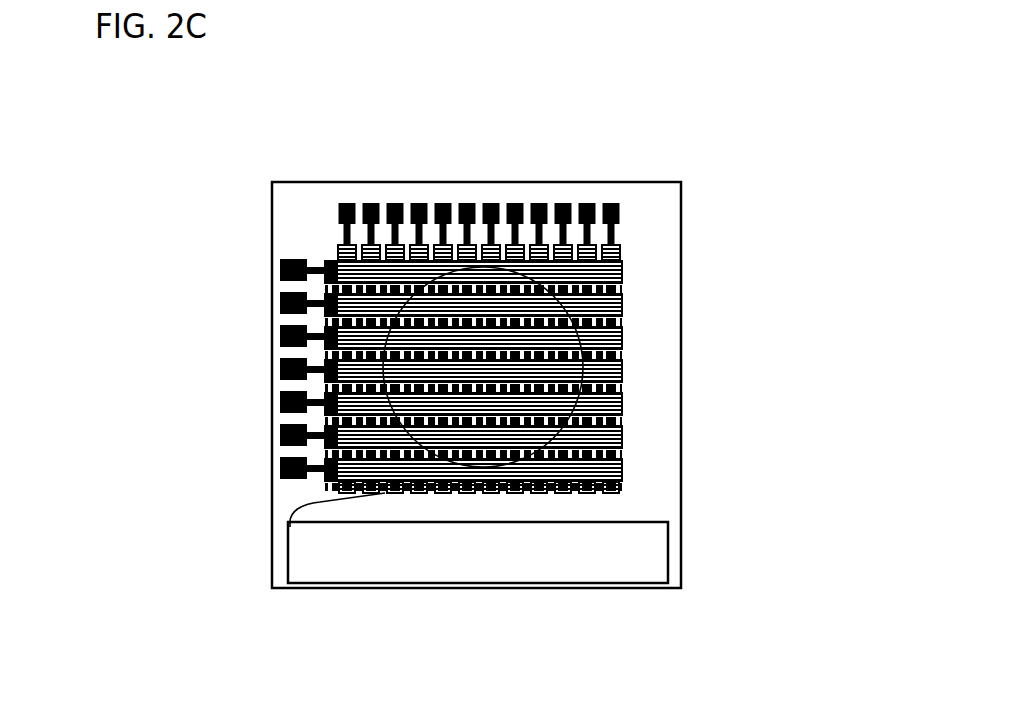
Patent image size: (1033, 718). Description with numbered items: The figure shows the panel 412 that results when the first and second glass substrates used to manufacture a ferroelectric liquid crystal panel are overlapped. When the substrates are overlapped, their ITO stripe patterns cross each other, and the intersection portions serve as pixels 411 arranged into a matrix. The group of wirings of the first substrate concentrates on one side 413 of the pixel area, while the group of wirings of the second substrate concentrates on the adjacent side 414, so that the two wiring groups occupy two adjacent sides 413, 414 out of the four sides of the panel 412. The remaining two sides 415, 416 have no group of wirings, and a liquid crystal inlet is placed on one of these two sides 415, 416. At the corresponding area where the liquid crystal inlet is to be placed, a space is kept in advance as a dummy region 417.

The pixels 411 is at (585, 318).
The panel 412 is at (480, 313).
The side 413 is at (373, 182).
The side 414 is at (277, 312).
The side 415 is at (290, 527).
The side 416 is at (622, 352).
The dummy region 417 is at (537, 565).